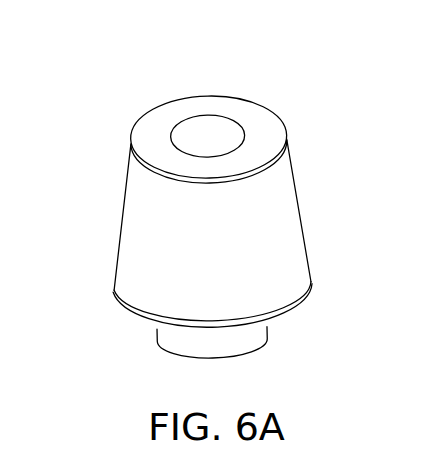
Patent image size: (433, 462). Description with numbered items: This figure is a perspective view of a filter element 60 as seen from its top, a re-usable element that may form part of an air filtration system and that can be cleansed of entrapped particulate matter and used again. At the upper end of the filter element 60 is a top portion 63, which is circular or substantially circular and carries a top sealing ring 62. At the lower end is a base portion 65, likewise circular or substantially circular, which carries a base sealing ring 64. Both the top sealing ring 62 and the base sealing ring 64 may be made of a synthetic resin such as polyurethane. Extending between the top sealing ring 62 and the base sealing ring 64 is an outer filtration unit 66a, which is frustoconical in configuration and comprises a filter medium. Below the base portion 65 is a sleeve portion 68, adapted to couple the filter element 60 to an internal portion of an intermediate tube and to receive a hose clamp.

The filter element 60 is at (284, 80).
The top portion 63 is at (130, 122).
The top sealing ring 62 is at (258, 173).
The outer filtration unit 66a is at (233, 253).
The base portion 65 is at (115, 296).
The base sealing ring 64 is at (289, 306).
The sleeve portion 68 is at (168, 343).